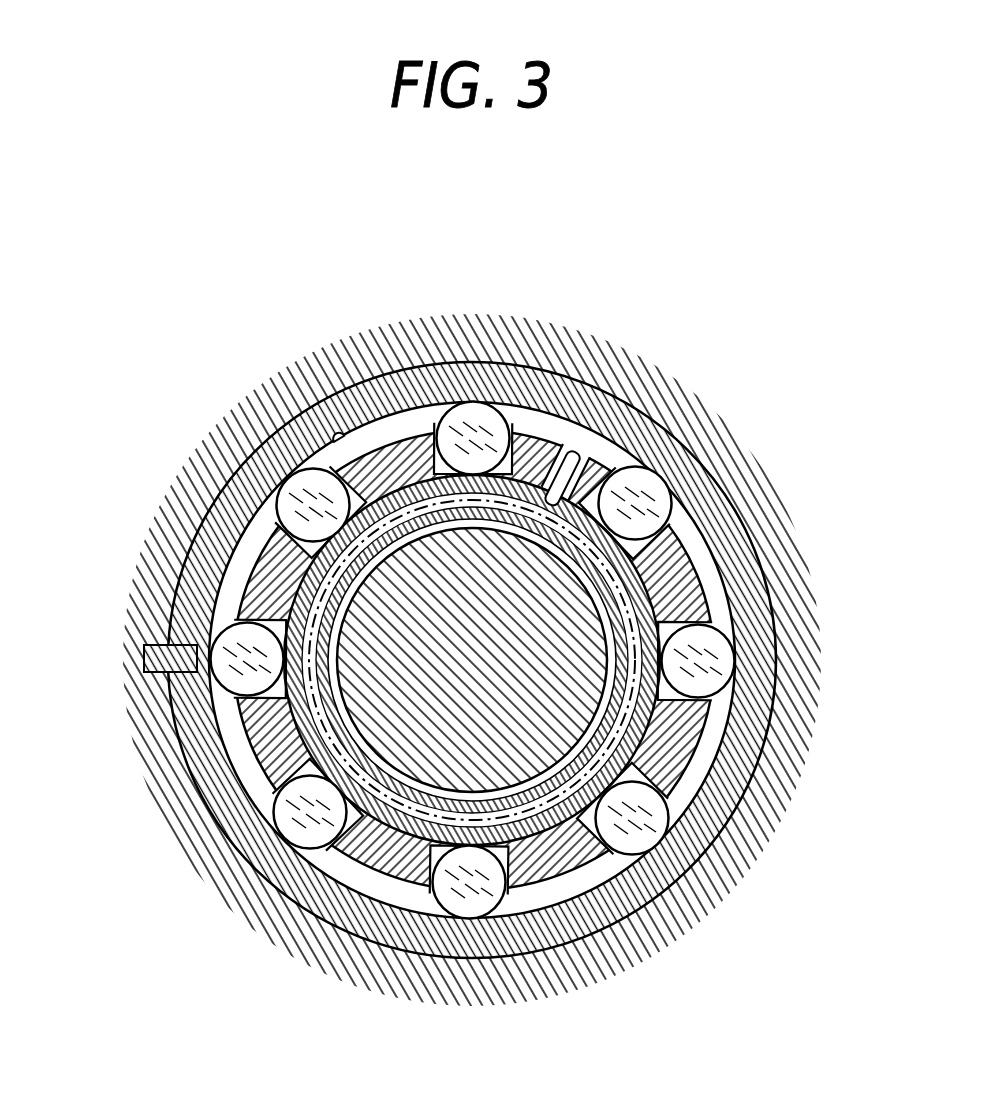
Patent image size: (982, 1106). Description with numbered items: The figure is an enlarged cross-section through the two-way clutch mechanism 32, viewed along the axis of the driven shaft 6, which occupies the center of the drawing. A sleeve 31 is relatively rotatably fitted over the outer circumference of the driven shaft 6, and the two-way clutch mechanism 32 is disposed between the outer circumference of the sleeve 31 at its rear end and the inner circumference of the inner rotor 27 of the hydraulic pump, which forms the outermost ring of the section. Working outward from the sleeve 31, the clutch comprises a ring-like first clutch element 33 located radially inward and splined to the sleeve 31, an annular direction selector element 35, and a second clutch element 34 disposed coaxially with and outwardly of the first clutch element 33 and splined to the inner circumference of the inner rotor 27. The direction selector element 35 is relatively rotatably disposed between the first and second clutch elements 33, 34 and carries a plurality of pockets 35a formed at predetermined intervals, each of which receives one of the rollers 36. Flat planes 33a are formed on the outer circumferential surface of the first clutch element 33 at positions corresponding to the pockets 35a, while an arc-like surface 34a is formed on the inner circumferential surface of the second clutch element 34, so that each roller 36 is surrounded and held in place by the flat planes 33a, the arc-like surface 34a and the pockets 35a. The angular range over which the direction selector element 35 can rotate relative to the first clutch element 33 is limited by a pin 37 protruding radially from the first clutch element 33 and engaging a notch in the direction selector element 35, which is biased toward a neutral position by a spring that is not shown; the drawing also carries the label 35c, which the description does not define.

The driven shaft 6 is at (485, 678).
The inner rotor 27 is at (598, 362).
The sleeve 31 is at (382, 546).
The two-way clutch mechanism 32 is at (178, 771).
The first clutch element 33 is at (386, 843).
The flat planes 33a is at (672, 668).
The second clutch element 34 is at (392, 359).
The arc-like surface 34a is at (338, 440).
The direction selector element 35 is at (702, 573).
The pockets 35a is at (168, 633).
The pin 35c is at (553, 450).
The rollers 36 is at (290, 478).
The pin 37 is at (565, 460).